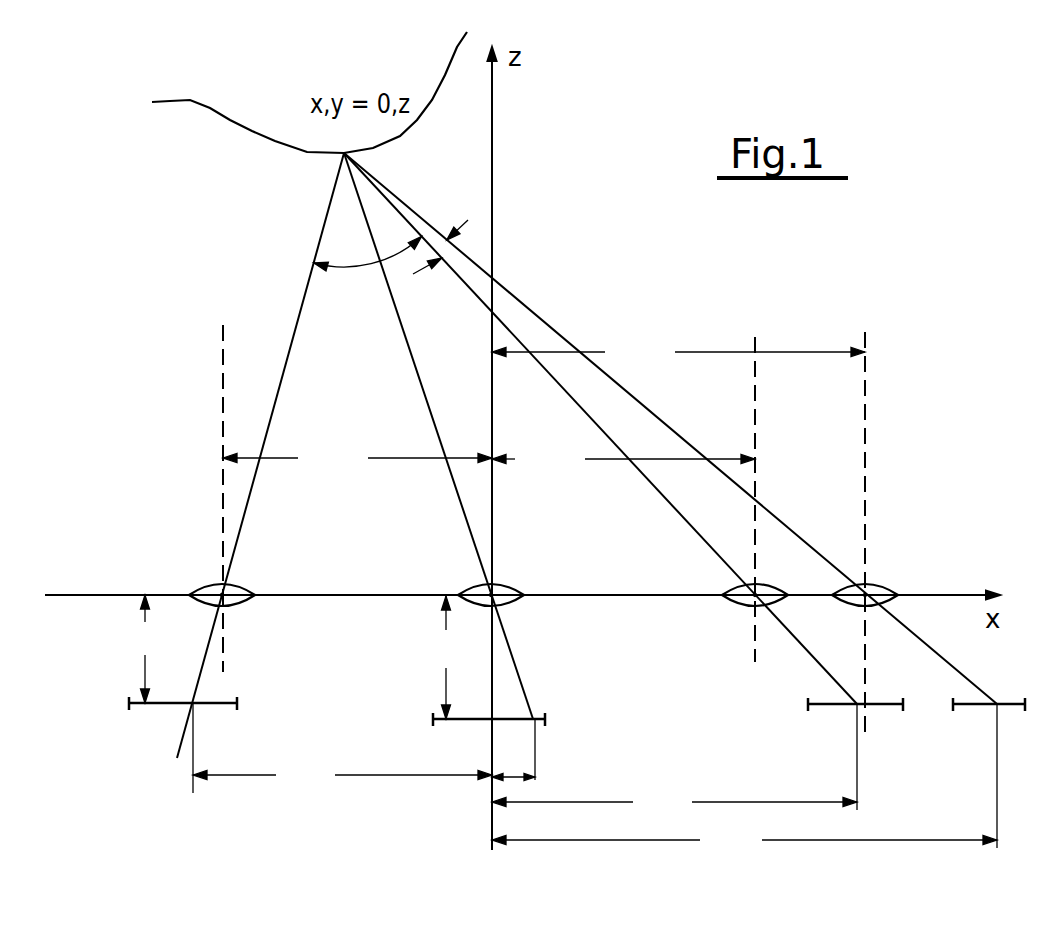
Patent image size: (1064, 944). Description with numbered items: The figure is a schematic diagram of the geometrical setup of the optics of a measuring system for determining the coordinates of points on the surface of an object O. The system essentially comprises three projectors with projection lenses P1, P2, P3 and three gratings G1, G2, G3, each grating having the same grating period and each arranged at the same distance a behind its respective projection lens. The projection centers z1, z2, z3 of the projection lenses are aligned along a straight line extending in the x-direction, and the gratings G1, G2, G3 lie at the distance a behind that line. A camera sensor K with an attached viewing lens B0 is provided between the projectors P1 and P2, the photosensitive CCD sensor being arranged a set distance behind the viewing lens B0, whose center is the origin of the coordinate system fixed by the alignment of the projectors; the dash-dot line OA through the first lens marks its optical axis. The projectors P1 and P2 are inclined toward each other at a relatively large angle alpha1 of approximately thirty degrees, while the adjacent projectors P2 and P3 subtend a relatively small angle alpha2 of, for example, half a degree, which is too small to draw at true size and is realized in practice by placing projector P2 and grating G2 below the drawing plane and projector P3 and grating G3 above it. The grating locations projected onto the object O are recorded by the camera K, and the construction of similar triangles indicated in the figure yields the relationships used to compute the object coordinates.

The object O is at (225, 117).
The optical axis of first camera OA is at (217, 483).
The projection lens P1 is at (203, 588).
The projection lens P2 is at (730, 587).
The projection lens P3 is at (857, 583).
The projection center z1 is at (220, 583).
The projection center z2 is at (743, 608).
The projection center z3 is at (860, 605).
The viewing lens B0 is at (500, 600).
The camera sensor K is at (467, 722).
The grating G1 is at (173, 707).
The grating G2 is at (888, 707).
The grating G3 is at (1012, 708).
The angle alpha1 is at (362, 268).
The angle alpha2 is at (450, 247).
The distance a is at (146, 649).